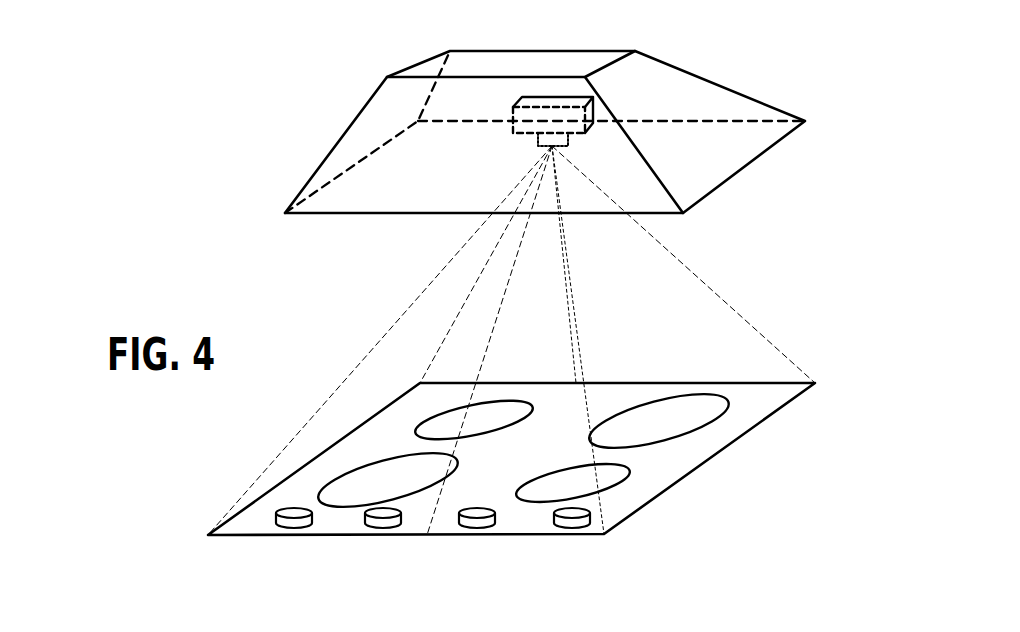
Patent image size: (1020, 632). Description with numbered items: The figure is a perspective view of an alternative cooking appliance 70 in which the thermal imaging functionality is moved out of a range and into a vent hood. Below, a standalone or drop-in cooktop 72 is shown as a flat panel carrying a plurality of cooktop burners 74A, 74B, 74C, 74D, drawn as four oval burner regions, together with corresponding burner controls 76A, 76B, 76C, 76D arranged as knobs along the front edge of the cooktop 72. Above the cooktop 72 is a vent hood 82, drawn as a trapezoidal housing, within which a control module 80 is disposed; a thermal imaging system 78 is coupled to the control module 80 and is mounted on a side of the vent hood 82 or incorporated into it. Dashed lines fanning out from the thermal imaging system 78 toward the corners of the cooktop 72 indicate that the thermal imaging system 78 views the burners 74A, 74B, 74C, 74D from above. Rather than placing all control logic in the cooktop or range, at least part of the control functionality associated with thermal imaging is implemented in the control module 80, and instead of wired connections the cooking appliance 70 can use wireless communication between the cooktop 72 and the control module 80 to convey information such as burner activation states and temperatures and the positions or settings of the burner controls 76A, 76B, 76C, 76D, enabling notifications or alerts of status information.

The cooking appliance 70 is at (208, 173).
The cooktop 72 is at (272, 489).
The cooktop burner 74A is at (347, 472).
The cooktop burner 74B is at (478, 403).
The cooktop burner 74C is at (638, 401).
The cooktop burner 74D is at (628, 482).
The burner control 76A is at (296, 540).
The burner control 76B is at (386, 540).
The burner control 76C is at (480, 540).
The burner control 76D is at (584, 530).
The thermal imaging system 78 is at (569, 134).
The control module 80 is at (596, 97).
The vent hood 82 is at (318, 167).